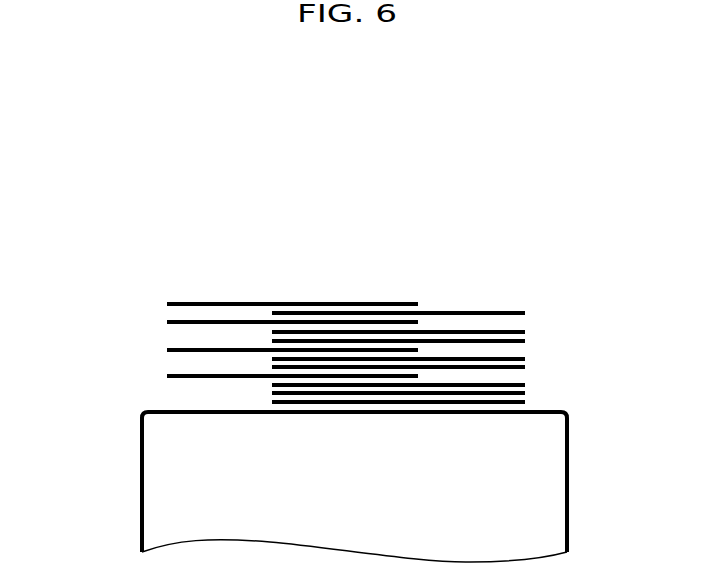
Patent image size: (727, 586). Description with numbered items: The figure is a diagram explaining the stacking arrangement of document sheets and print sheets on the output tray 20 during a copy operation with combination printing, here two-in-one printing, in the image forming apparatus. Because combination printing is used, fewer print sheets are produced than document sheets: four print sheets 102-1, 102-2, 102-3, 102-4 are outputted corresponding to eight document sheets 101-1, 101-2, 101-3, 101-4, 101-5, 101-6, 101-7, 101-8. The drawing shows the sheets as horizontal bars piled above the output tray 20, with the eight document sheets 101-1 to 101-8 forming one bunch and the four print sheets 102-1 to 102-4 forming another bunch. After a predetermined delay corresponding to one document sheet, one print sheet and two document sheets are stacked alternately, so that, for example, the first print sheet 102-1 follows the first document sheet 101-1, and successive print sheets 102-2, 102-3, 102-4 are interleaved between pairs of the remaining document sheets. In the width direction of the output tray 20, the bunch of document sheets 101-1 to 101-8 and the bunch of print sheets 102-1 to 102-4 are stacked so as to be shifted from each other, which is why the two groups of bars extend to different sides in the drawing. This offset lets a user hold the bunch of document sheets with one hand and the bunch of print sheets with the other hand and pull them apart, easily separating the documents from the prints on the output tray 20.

The print sheet 102-4 is at (167, 304).
The print sheet 102-3 is at (167, 322).
The print sheet 102-2 is at (167, 350).
The print sheet 102-1 is at (167, 376).
The document sheet 101-8 is at (525, 313).
The document sheet 101-7 is at (525, 332).
The document sheet 101-6 is at (525, 341).
The document sheet 101-5 is at (525, 359).
The document sheet 101-4 is at (525, 367).
The document sheet 101-3 is at (525, 385).
The document sheet 101-2 is at (525, 393).
The document sheet 101-1 is at (525, 402).
The output tray 20 is at (560, 406).